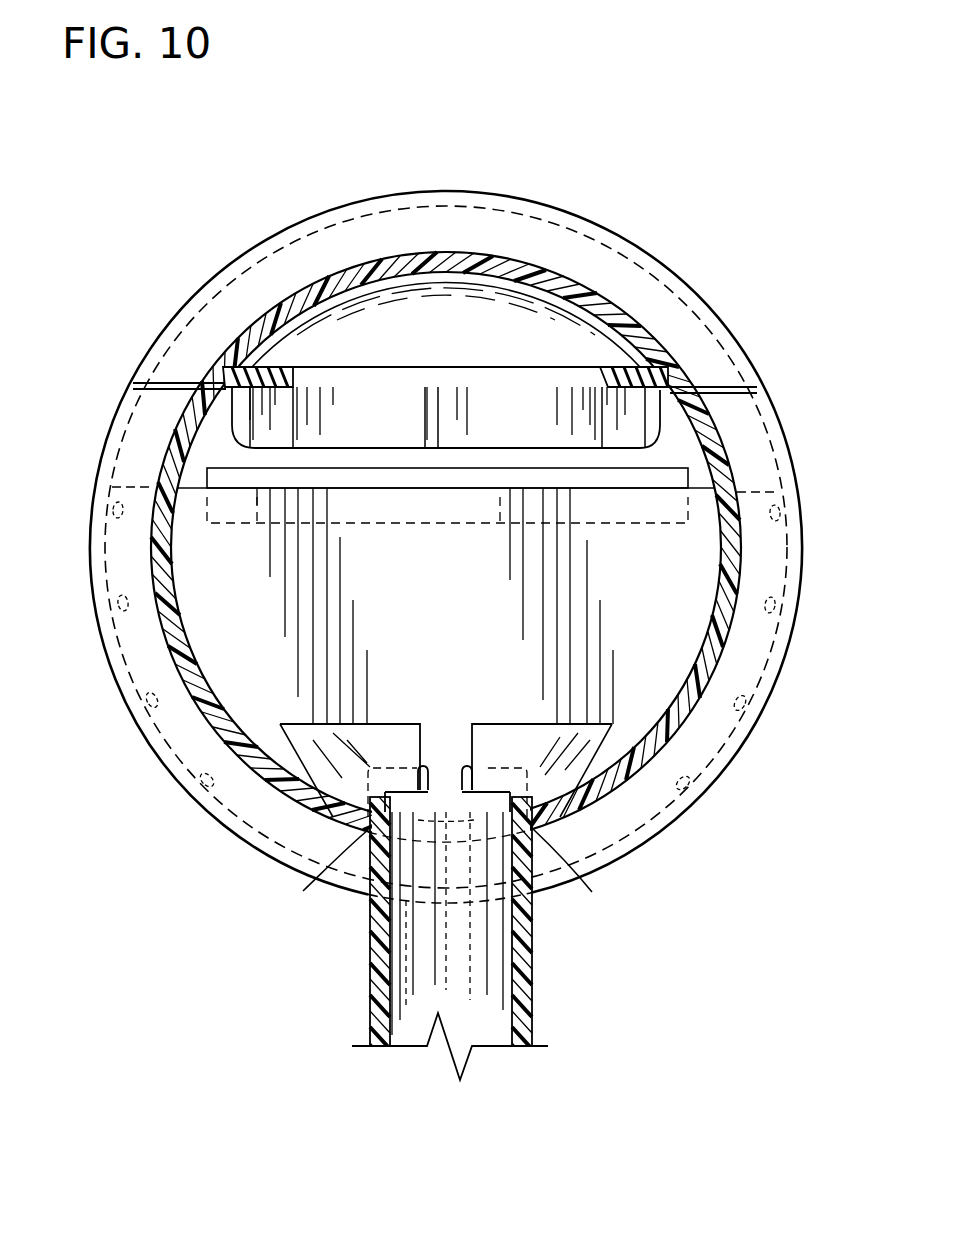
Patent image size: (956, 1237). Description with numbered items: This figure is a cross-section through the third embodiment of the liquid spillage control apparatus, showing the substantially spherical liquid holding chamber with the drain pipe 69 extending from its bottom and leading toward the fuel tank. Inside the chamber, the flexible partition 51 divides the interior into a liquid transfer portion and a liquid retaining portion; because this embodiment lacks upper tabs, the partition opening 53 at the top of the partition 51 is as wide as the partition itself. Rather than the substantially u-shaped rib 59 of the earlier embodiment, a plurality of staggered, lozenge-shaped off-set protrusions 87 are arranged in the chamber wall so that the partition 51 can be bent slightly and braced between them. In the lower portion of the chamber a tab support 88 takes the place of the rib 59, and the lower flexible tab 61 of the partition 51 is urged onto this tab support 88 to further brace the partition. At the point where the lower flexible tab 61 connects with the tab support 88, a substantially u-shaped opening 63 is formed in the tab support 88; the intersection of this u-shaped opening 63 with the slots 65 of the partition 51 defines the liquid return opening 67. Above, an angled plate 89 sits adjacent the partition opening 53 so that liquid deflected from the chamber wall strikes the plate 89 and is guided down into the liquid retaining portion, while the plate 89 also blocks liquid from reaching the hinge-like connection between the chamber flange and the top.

The partition 51 is at (448, 590).
The partition opening 53 is at (530, 440).
The rib 59 is at (672, 673).
The lower flexible tab 61 is at (534, 938).
The substantially u-shaped opening 63 is at (368, 850).
The slots 65 is at (400, 790).
The liquid return opening 67 is at (462, 778).
The drain pipe 69 is at (422, 968).
The off-set protrusions 87 is at (192, 778).
The tab support 88 is at (567, 813).
The plate 89 is at (660, 480).